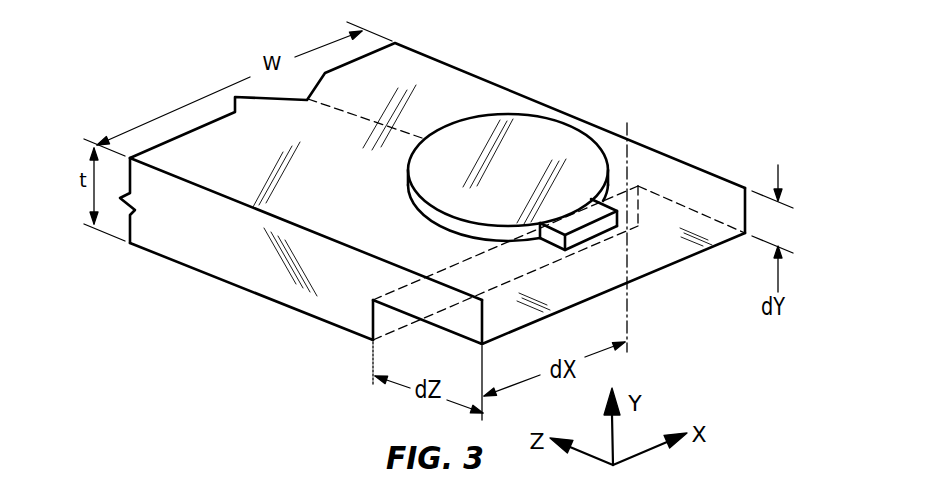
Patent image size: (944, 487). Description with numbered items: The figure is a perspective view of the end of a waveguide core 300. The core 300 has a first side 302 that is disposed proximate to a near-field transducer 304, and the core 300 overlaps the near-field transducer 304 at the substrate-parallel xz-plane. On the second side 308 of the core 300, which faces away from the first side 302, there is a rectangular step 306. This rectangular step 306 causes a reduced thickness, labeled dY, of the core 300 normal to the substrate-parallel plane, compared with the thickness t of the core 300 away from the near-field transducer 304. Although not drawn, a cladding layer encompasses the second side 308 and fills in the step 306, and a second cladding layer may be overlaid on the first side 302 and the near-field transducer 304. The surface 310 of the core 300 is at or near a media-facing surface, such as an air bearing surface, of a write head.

The waveguide core 300 is at (443, 204).
The first side 302 is at (427, 84).
The near-field transducer 304 is at (565, 132).
The rectangular step 306 is at (668, 305).
The second side 308 is at (330, 327).
The surface 310 is at (718, 225).